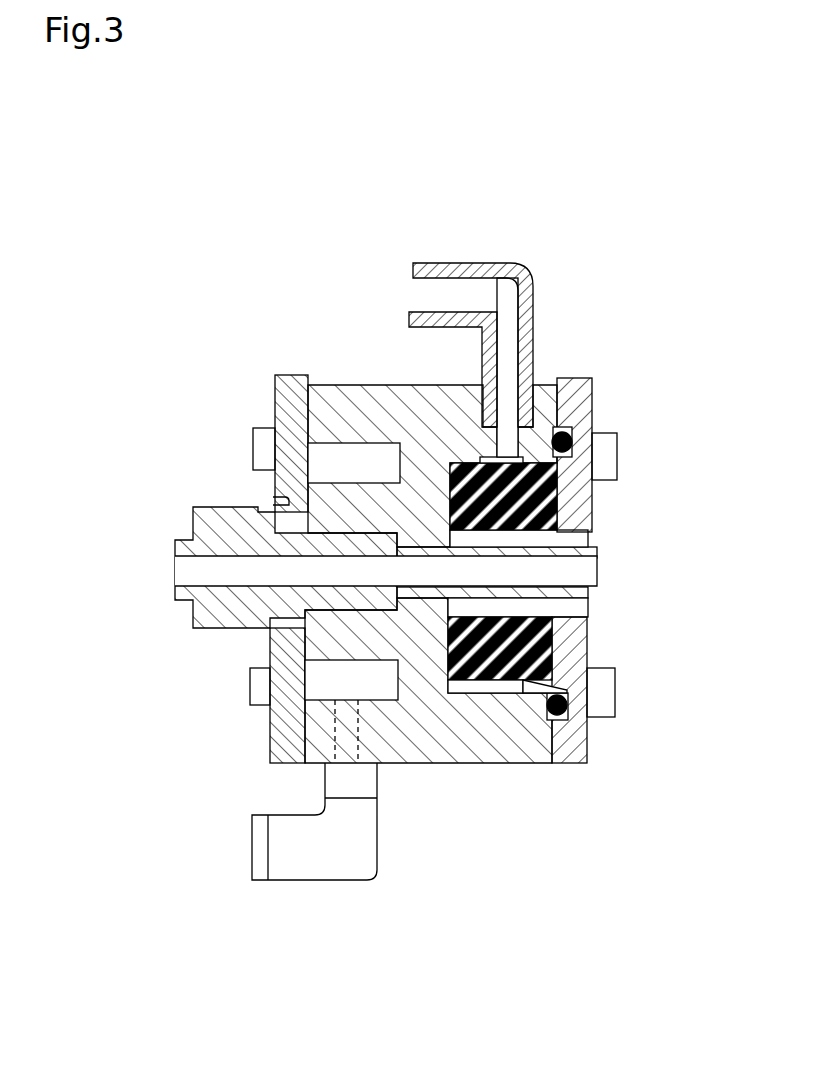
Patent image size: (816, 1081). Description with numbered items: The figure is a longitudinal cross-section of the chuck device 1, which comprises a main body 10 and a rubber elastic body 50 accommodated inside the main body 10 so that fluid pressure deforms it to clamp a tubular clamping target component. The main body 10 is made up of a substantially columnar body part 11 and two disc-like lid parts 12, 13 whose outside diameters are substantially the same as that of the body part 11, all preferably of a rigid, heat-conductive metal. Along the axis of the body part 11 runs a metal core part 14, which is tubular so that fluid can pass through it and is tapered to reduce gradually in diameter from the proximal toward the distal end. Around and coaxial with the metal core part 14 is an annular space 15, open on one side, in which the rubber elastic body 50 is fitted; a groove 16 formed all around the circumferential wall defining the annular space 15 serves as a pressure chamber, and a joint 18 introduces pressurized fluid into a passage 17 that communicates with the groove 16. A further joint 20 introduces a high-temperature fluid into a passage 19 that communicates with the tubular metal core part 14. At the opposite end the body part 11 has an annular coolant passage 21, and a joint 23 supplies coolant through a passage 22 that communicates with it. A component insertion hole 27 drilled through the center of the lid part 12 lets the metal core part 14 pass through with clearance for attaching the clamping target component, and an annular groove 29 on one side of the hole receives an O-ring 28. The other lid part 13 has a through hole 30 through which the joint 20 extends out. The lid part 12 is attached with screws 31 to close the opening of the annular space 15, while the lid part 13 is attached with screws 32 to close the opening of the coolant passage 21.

The chuck device 1 is at (335, 363).
The main body 10 is at (372, 393).
The body part 11 is at (423, 740).
The lid part 12 is at (565, 420).
The lid part 13 is at (285, 398).
The metal core part 14 is at (545, 592).
The annular space 15 is at (463, 683).
The groove 16 is at (510, 687).
The passage 17 is at (503, 440).
The joint 18 is at (462, 263).
The passage 19 is at (423, 572).
The joint 20 is at (193, 543).
The annular coolant passage 21 is at (338, 470).
The passage 22 is at (325, 745).
The joint 23 is at (320, 863).
The component insertion hole 27 is at (577, 538).
The O-ring 28 is at (573, 432).
The annular groove 29 is at (568, 718).
The through hole 30 is at (270, 505).
The screws 31 is at (610, 700).
The screws 32 is at (260, 697).
The rubber elastic body 50 is at (587, 650).